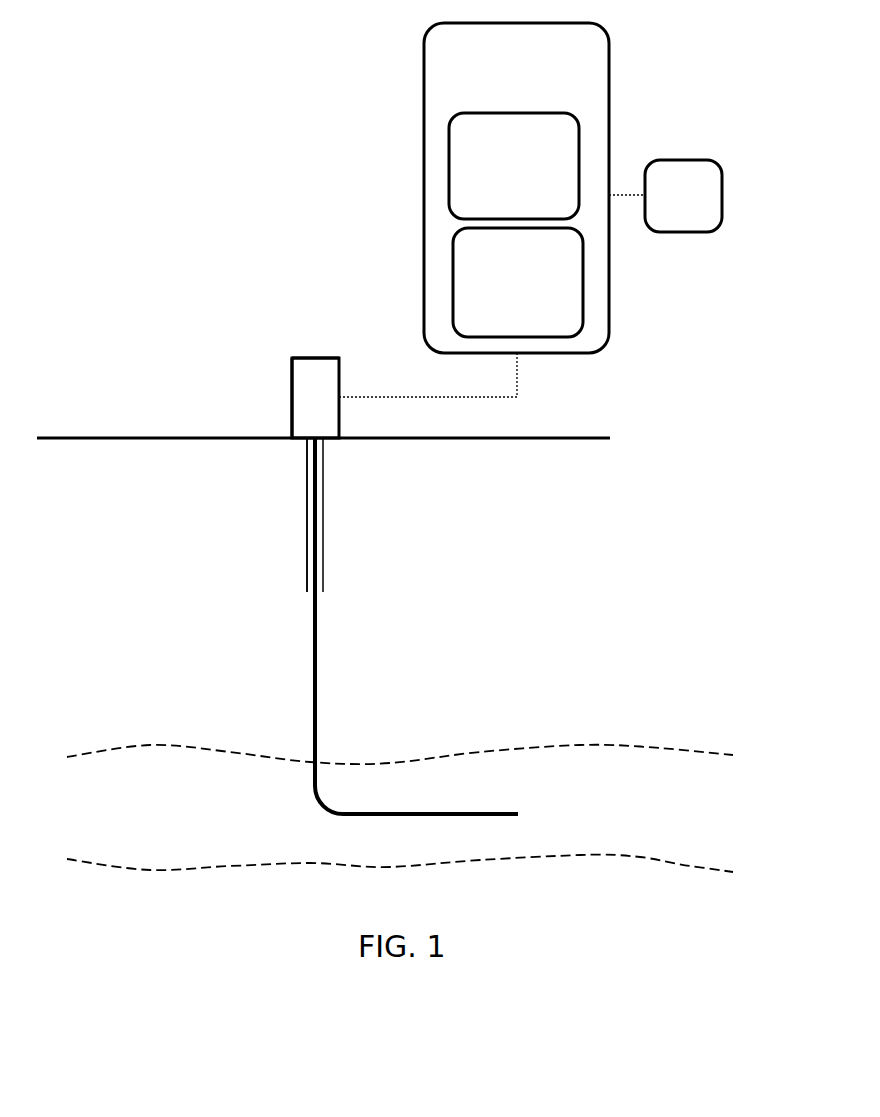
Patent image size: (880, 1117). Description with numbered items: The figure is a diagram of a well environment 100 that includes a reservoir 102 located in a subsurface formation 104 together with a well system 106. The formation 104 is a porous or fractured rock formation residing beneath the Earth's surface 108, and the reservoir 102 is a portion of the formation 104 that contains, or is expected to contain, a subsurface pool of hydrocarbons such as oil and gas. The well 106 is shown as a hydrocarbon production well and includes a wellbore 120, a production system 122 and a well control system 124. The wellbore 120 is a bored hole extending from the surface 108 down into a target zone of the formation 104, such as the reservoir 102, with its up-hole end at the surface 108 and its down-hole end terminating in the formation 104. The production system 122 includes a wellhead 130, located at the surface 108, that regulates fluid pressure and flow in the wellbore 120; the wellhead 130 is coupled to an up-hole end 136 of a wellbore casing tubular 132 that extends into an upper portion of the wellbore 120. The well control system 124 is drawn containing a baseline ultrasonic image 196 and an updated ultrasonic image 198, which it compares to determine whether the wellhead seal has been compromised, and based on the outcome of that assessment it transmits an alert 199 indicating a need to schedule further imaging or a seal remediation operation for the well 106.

The well environment 100 is at (153, 45).
The reservoir 102 is at (603, 821).
The subsurface formation 104 is at (610, 664).
The well system 106 is at (273, 224).
The surface 108 is at (518, 453).
The wellbore 120 is at (305, 723).
The production system 122 is at (270, 310).
The well control system 124 is at (468, 103).
The wellhead 130 is at (284, 375).
The wellbore casing tubular 132 is at (297, 526).
The up-hole end of casing 136 is at (297, 459).
The baseline ultrasonic image 196 is at (496, 213).
The updated ultrasonic image 198 is at (500, 318).
The alert 199 is at (665, 218).